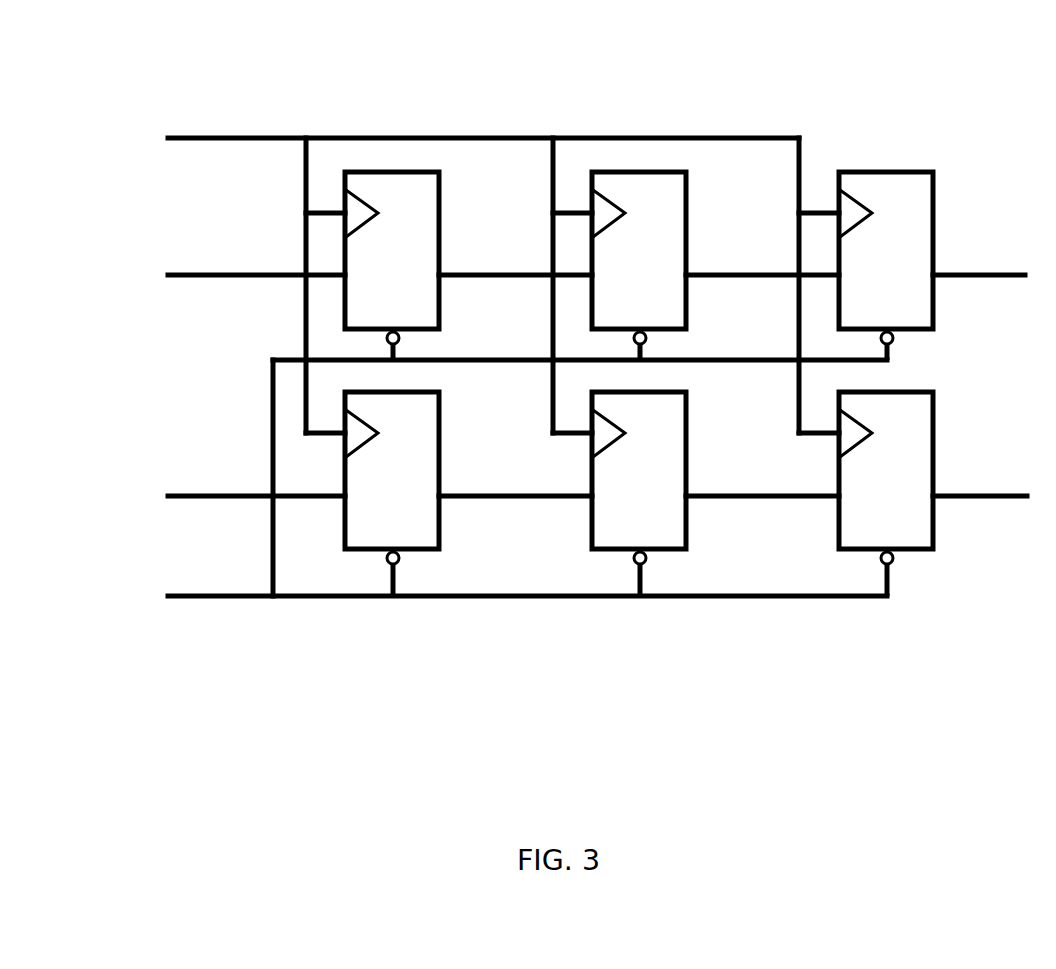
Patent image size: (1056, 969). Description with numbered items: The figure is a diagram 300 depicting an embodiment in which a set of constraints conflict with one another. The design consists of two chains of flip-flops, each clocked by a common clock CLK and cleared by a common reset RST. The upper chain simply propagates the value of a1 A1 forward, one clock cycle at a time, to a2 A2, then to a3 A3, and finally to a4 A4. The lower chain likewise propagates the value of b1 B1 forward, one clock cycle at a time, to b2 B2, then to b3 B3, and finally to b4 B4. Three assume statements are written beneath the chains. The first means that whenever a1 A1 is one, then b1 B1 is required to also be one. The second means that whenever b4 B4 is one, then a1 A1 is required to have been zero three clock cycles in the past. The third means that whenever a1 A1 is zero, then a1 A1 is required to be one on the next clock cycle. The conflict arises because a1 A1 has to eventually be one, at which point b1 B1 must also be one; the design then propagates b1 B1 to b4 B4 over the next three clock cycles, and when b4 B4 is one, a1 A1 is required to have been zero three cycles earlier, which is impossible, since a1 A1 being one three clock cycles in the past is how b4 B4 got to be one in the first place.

The diagram 300 is at (70, 58).
The clock CLK is at (497, 267).
The reset RST is at (521, 470).
The a1 A1 is at (250, 257).
The a2 A2 is at (515, 257).
The a3 A3 is at (762, 256).
The a4 A4 is at (979, 257).
The b1 B1 is at (250, 477).
The b2 B2 is at (515, 477).
The b3 B3 is at (762, 477).
The b4 B4 is at (980, 477).